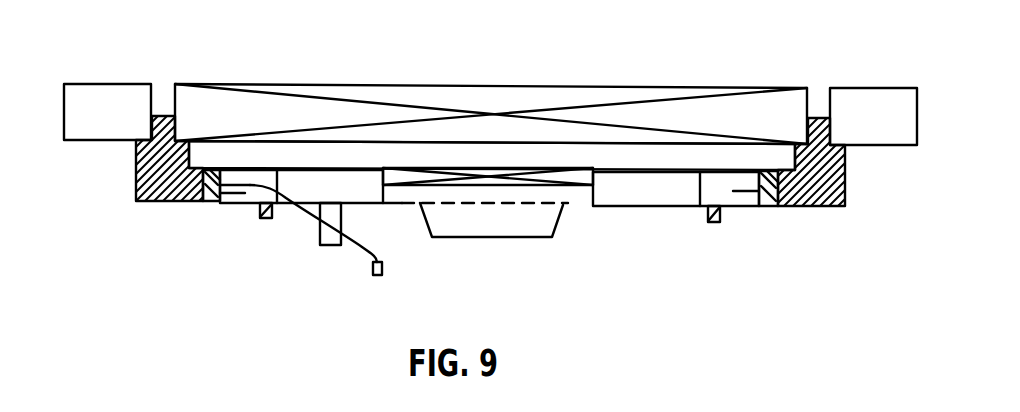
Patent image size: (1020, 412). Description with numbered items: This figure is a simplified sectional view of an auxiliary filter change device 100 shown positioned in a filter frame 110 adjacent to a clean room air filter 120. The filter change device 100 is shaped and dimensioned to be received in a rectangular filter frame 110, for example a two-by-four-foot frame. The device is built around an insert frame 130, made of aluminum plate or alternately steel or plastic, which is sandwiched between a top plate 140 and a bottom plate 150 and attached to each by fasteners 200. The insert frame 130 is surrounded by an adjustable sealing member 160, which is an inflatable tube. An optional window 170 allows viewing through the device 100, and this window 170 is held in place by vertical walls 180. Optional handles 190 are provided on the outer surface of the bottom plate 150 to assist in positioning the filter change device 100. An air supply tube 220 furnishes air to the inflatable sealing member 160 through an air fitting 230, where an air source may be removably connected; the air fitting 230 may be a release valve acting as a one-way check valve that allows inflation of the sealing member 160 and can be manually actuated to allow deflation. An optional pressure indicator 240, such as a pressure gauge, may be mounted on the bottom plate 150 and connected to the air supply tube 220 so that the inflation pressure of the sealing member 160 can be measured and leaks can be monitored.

The filter change device 100 is at (414, 237).
The filter frame 110 is at (490, 178).
The clean room air filter 120 is at (455, 85).
The insert frame 130 is at (245, 193).
The top plate 140 is at (612, 170).
The bottom plate 150 is at (635, 206).
The adjustable sealing member 160 is at (518, 223).
The window 170 is at (576, 176).
The vertical walls 180 is at (383, 183).
The handles 190 is at (497, 238).
The fasteners 200 is at (267, 218).
The air supply tube 220 is at (257, 184).
The air fitting 230 is at (372, 274).
The pressure indicator 240 is at (327, 240).